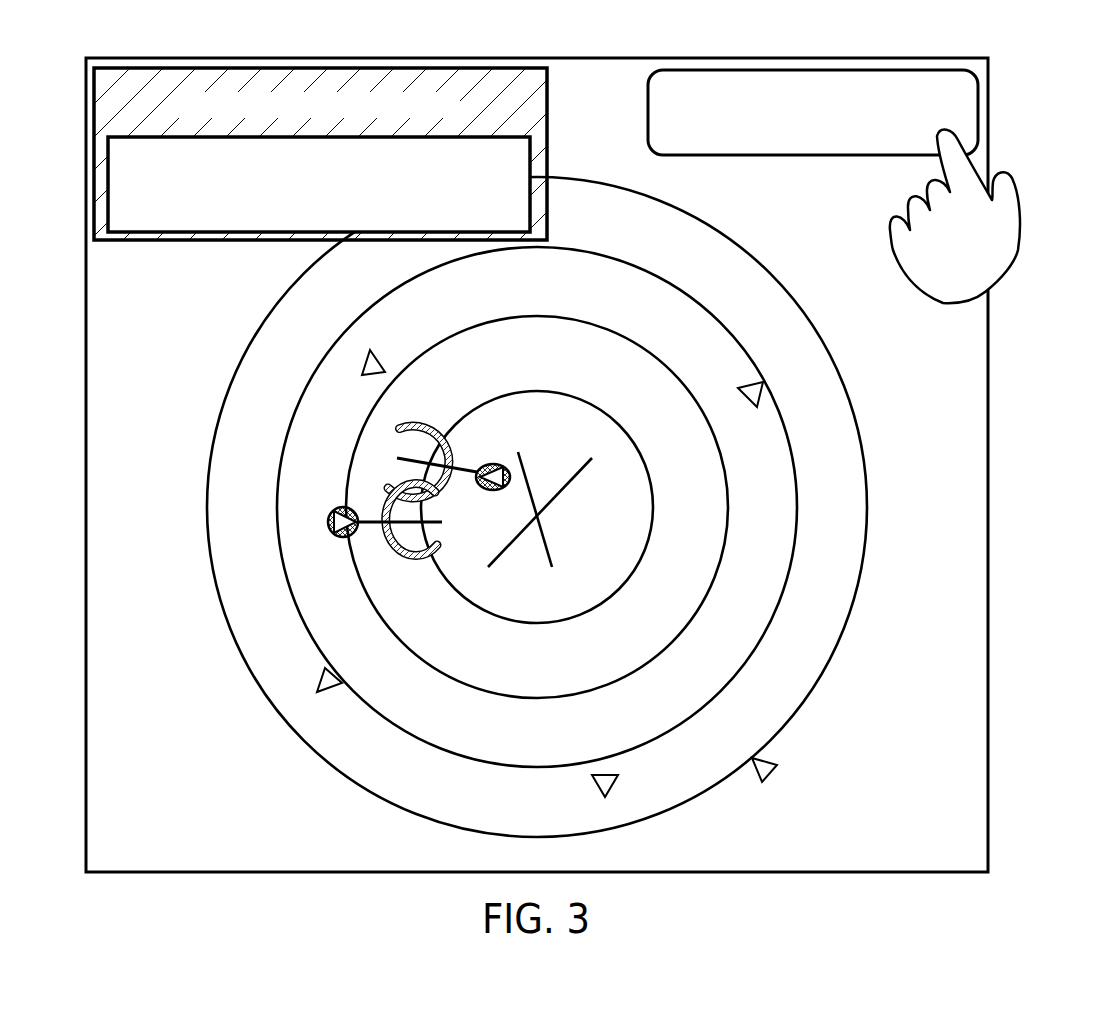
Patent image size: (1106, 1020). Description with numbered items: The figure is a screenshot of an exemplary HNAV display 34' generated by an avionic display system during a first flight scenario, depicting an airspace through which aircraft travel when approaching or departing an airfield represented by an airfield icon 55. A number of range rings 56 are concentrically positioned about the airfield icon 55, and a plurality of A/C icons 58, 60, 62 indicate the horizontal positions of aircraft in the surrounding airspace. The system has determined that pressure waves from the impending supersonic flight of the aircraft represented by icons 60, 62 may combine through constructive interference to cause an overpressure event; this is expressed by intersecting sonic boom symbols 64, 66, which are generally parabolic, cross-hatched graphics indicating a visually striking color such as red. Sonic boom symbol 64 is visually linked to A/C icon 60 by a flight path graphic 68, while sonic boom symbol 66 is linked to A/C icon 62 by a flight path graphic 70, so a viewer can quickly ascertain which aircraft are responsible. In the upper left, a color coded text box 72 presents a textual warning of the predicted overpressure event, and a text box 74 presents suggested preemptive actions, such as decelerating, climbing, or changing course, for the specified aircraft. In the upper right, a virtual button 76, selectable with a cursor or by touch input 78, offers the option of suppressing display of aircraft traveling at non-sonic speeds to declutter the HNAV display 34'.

The HNAV display 34' is at (537, 465).
The airfield icon 55 is at (553, 502).
The range rings 56 is at (736, 244).
The A/C icons 58 is at (380, 357).
The A/C icon 60 is at (493, 465).
The A/C icon 62 is at (337, 510).
The sonic boom symbol 64 is at (427, 430).
The sonic boom symbol 66 is at (420, 558).
The flight path graphic 68 is at (473, 470).
The flight path graphic 70 is at (372, 524).
The color coded text box 72 is at (300, 68).
The text box 74 is at (520, 221).
The virtual button 76 is at (824, 70).
The touch input 78 is at (947, 305).